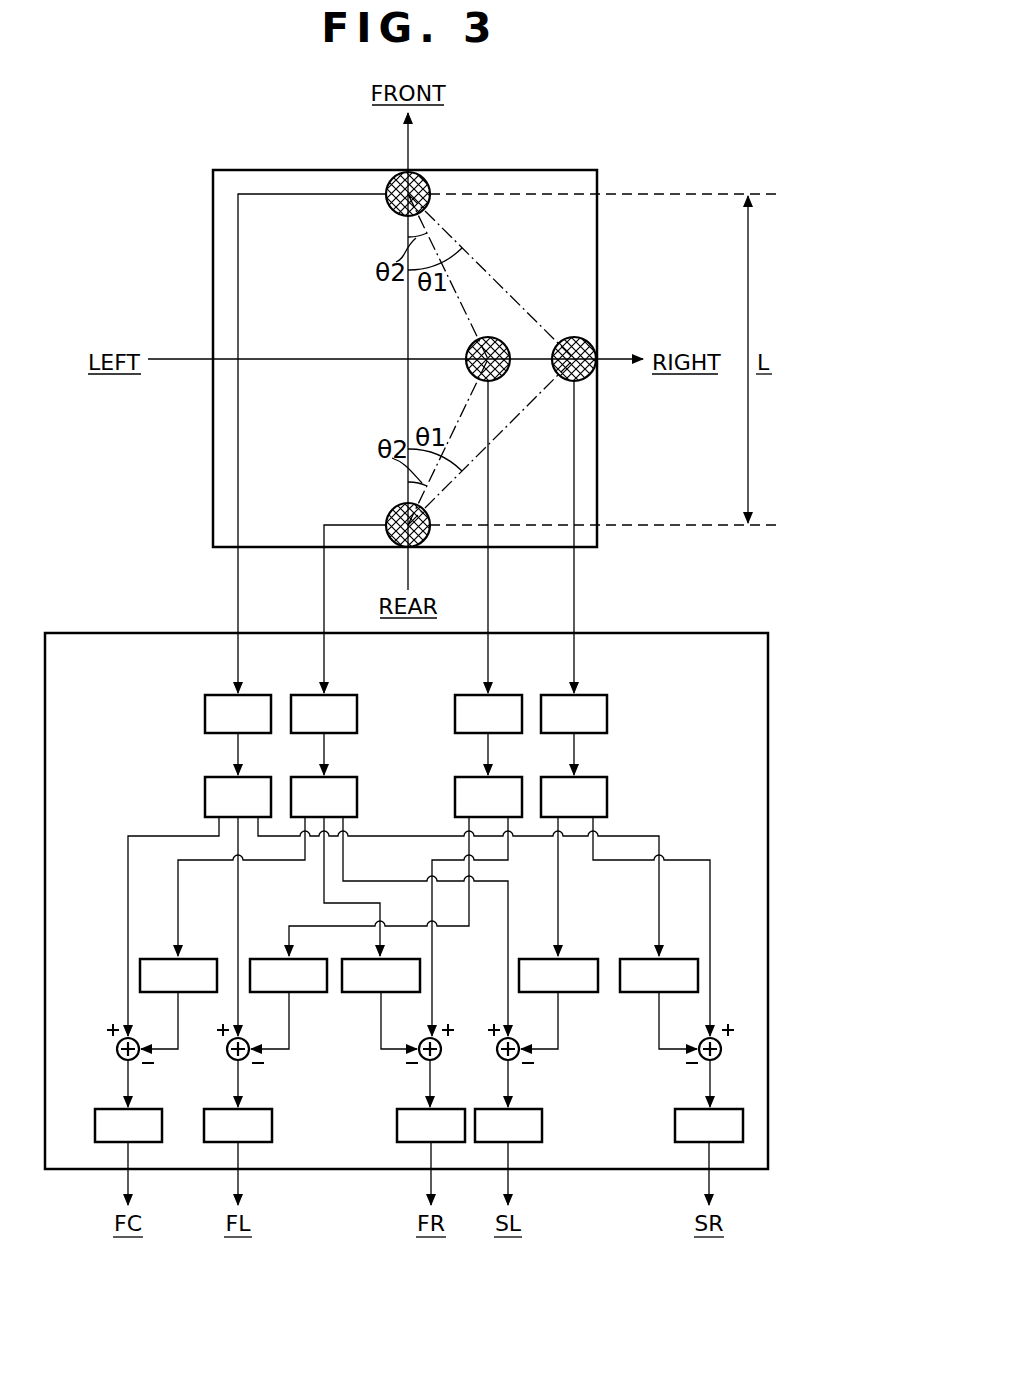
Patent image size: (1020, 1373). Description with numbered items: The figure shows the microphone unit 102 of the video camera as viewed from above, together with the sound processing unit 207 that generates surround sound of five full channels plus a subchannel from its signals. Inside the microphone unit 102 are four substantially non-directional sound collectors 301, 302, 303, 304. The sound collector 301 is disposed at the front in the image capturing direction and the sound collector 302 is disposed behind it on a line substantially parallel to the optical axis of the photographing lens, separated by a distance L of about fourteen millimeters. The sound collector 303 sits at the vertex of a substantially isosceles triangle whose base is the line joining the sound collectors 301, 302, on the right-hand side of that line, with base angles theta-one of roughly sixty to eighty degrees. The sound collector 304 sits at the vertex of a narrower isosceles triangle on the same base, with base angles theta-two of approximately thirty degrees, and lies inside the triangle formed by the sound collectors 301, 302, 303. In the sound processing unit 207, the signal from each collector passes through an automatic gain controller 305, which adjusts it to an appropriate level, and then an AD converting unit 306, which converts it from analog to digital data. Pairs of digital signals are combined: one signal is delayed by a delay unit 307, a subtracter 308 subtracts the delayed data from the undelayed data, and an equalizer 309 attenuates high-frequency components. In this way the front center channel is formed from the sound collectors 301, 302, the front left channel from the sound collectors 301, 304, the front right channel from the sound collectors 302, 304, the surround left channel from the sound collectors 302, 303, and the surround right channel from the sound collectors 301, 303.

The microphone unit 102 is at (290, 170).
The sound processing unit 207 is at (128, 633).
The sound collector 301 is at (432, 200).
The sound collector 302 is at (390, 512).
The sound collector 303 is at (571, 337).
The sound collector 304 is at (467, 345).
The automatic gain controller 305 is at (275, 681).
The AD converting unit 306 is at (275, 764).
The delay unit 307 is at (210, 941).
The subtracter 308 is at (121, 1060).
The equalizer 309 is at (162, 1122).